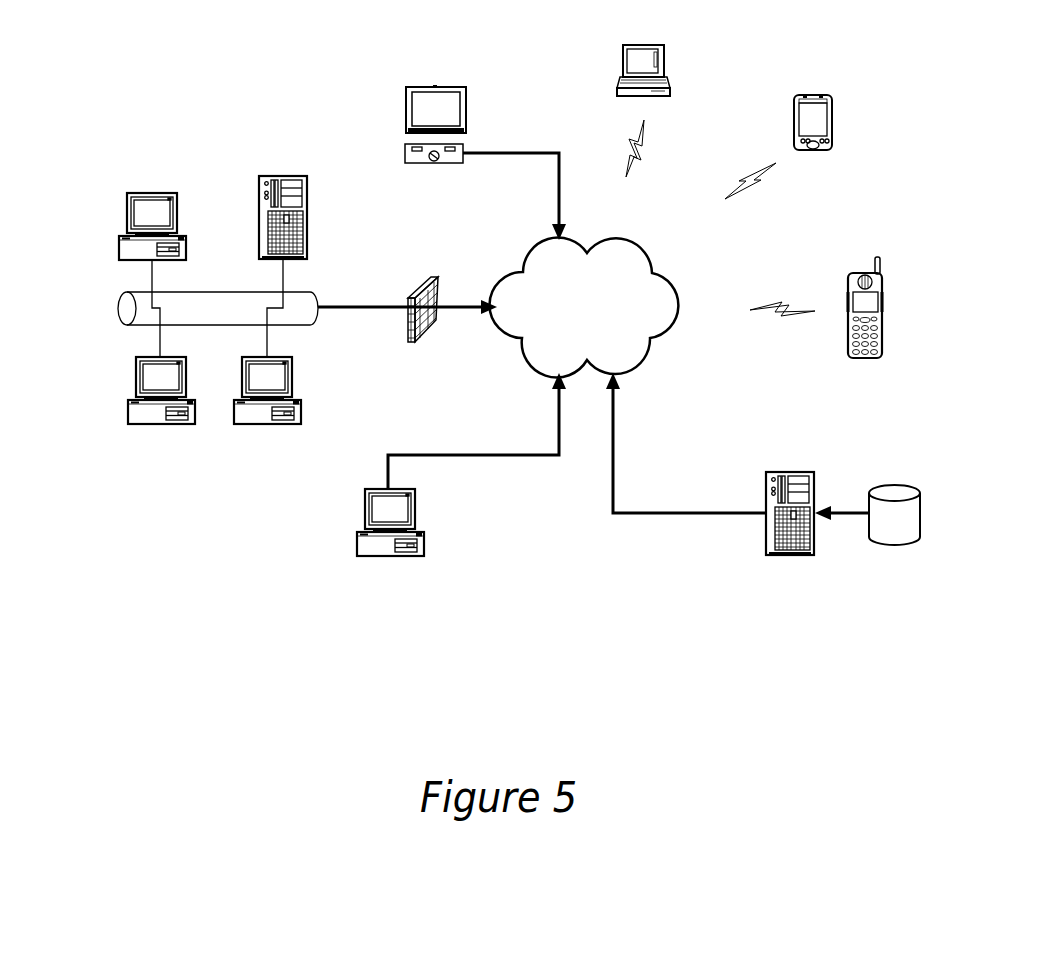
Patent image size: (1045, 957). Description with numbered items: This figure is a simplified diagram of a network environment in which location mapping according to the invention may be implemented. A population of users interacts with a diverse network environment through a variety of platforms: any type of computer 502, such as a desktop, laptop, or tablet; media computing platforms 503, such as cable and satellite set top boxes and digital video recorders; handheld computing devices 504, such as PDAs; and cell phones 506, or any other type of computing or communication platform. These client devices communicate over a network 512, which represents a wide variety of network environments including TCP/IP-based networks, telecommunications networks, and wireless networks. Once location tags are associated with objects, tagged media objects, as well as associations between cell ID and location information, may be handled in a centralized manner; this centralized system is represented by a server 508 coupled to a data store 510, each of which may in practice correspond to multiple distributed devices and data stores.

The computer 502 is at (127, 215).
The media computing platform 503 is at (405, 150).
The handheld computing device 504 is at (795, 97).
The cell phone 506 is at (850, 275).
The server 508 is at (767, 475).
The data store 510 is at (893, 485).
The network 512 is at (532, 250).